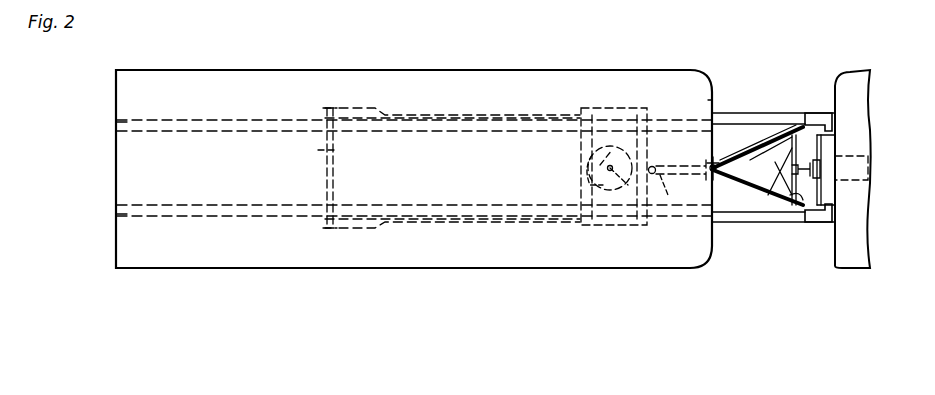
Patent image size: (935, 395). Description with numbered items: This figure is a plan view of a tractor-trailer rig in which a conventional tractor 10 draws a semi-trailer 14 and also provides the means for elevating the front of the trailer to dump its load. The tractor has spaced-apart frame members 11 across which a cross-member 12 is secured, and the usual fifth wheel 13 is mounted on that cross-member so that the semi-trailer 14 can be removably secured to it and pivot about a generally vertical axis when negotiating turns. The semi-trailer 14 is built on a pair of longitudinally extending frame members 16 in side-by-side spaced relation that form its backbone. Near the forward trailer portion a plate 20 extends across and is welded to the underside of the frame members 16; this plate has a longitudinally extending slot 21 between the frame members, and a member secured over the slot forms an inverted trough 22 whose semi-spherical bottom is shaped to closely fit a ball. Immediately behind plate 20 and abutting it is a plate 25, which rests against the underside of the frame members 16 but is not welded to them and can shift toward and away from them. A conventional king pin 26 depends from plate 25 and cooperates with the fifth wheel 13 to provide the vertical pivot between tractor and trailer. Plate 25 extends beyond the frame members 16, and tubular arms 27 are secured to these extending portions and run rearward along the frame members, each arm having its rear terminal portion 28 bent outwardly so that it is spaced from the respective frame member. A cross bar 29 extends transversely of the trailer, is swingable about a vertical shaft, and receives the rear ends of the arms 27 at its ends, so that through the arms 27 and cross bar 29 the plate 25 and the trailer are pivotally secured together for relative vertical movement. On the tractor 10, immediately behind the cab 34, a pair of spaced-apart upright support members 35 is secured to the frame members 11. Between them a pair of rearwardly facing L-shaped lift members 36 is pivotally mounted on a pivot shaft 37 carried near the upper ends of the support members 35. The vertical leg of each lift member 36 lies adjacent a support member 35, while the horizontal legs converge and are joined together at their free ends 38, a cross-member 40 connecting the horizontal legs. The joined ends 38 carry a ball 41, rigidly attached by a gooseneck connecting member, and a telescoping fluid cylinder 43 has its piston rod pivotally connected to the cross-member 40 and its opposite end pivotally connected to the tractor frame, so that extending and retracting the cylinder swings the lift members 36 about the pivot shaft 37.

The tractor 10 is at (822, 92).
The frame members 11 is at (750, 113).
The cross-member 12 is at (614, 160).
The fifth wheel 13 is at (630, 192).
The semi-trailer 14 is at (206, 220).
The frame members 16 is at (128, 210).
The plate 20 is at (712, 248).
The slot 21 is at (666, 176).
The inverted trough 22 is at (684, 170).
The plate 25 is at (587, 165).
The king pin 26 is at (613, 196).
The arms 27 is at (452, 110).
The rear terminal portion 28 is at (342, 108).
The cross bar 29 is at (328, 158).
The cab 34 is at (852, 82).
The upright support members 35 is at (815, 113).
The L-shaped lift members 36 is at (744, 171).
The pivot shaft 37 is at (818, 143).
The joined ends 38 is at (714, 166).
The cross-member 40 is at (800, 203).
The ball 41 is at (712, 100).
The fluid cylinder 43 is at (856, 176).